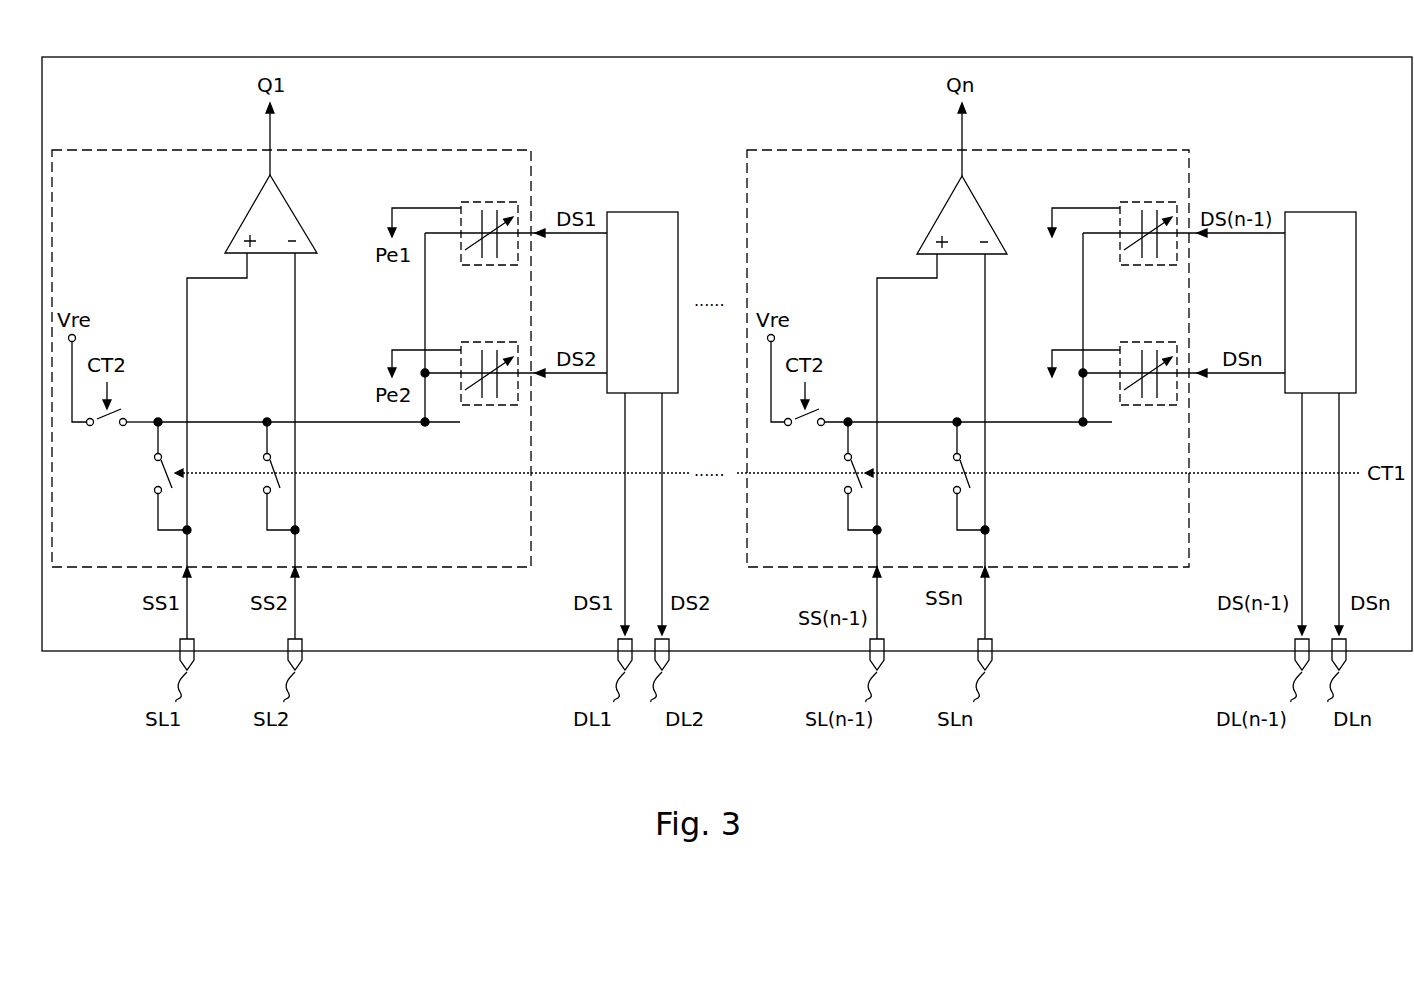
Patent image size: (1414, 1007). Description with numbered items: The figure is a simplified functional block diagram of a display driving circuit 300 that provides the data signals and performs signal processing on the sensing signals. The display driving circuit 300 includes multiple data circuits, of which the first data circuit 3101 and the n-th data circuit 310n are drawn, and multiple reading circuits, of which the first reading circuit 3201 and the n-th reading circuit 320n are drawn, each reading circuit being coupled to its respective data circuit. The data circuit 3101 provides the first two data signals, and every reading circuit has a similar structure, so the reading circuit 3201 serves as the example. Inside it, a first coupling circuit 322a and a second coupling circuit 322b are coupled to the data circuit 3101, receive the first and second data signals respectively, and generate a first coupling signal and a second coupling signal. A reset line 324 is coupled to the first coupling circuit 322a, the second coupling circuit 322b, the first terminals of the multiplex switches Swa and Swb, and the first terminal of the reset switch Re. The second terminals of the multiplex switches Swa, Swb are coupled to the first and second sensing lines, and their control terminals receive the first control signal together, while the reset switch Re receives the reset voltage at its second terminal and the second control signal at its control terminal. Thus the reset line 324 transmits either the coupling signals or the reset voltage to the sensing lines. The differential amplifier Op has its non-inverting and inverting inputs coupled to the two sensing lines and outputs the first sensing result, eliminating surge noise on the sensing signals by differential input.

The display driving circuit 300 is at (443, 57).
The reading circuit 3201 is at (385, 150).
The reading circuit 320n is at (1107, 150).
The data circuit 3101 is at (645, 212).
The data circuit 310n is at (1323, 212).
The first coupling circuit 322a is at (497, 202).
The second coupling circuit 322b is at (497, 342).
The reset line 324 is at (443, 423).
The differential amplifier Op is at (248, 213).
The reset switch Re is at (123, 428).
The multiplex switch Swa is at (156, 497).
The multiplex switch Swb is at (265, 497).